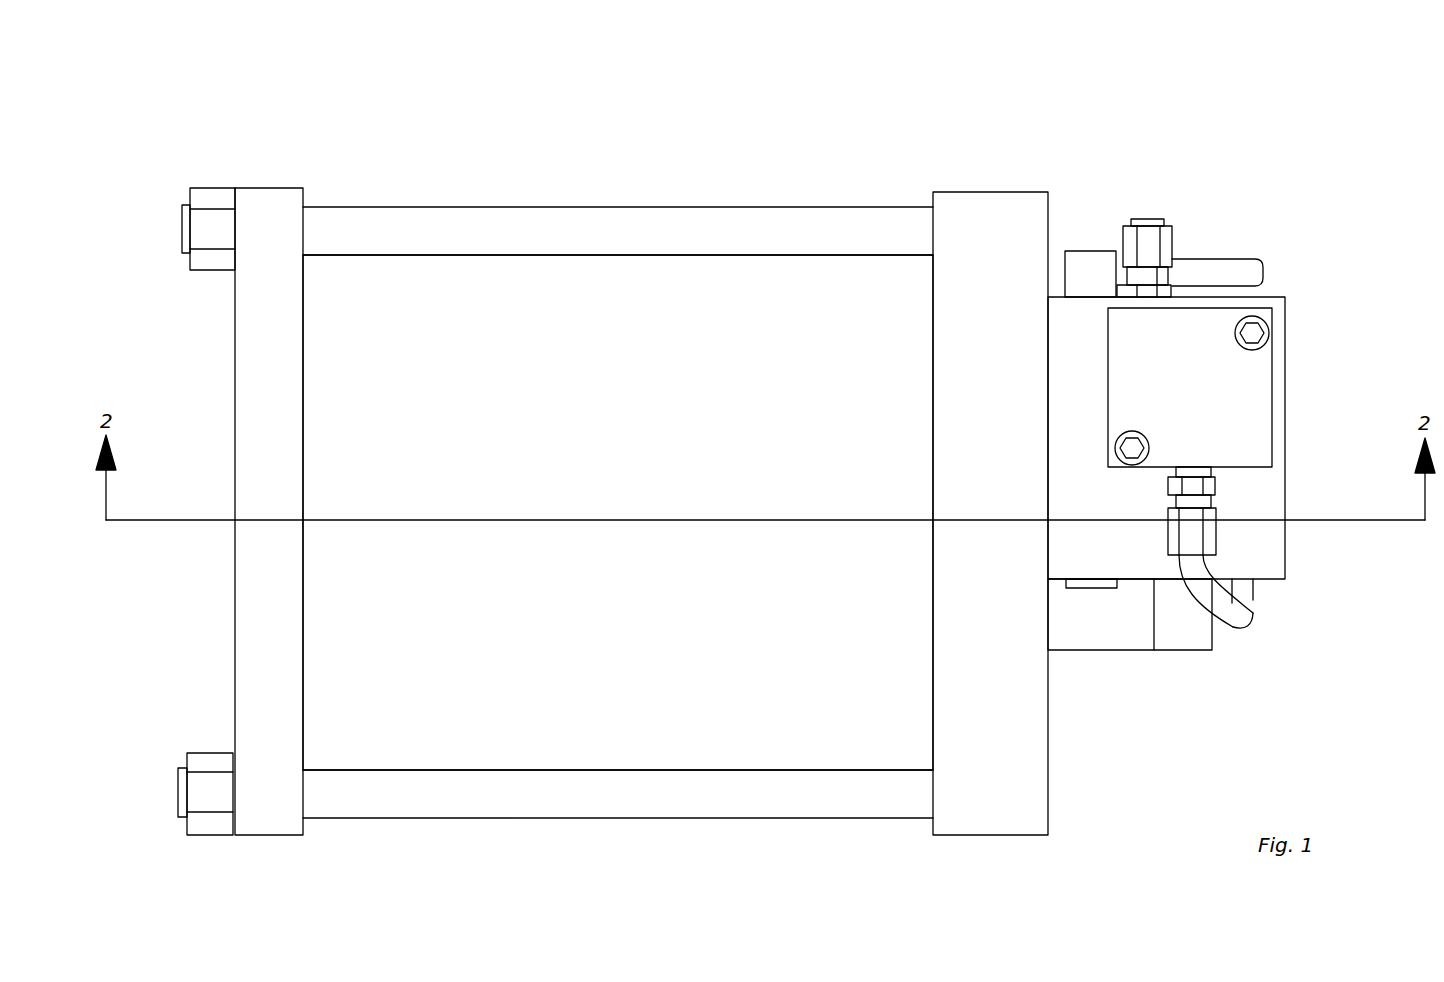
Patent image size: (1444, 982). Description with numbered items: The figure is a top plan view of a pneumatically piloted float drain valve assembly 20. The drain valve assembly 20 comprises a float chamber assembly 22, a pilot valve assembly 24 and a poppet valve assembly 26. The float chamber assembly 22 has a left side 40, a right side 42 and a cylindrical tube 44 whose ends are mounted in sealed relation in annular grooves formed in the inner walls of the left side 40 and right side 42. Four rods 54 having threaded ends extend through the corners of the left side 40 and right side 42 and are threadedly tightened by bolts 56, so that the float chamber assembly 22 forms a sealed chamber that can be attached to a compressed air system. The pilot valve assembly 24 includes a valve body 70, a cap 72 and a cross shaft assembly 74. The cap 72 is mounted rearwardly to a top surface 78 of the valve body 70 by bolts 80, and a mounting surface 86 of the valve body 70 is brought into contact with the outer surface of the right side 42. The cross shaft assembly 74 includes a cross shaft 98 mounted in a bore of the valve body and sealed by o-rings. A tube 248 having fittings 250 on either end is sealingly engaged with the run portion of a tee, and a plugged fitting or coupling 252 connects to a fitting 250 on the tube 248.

The drain valve assembly 20 is at (902, 125).
The float chamber assembly 22 is at (384, 162).
The pilot valve assembly 24 is at (1310, 422).
The poppet valve assembly 26 is at (1144, 668).
The left side 40 is at (246, 385).
The right side 42 is at (1035, 211).
The cylindrical tube 44 is at (616, 673).
The rods 54 is at (492, 215).
The bolts 56 is at (212, 195).
The valve body 70 is at (1277, 561).
The cap 72 is at (1265, 373).
The cross shaft assembly 74 is at (1084, 600).
The top surface 78 is at (1096, 380).
The bolts 80 is at (1236, 340).
The mounting surface 86 is at (1047, 345).
The cross shaft 98 is at (1118, 590).
The tube 248 is at (1251, 615).
The fittings 250 is at (1216, 490).
The plugged fitting 252 is at (1157, 280).